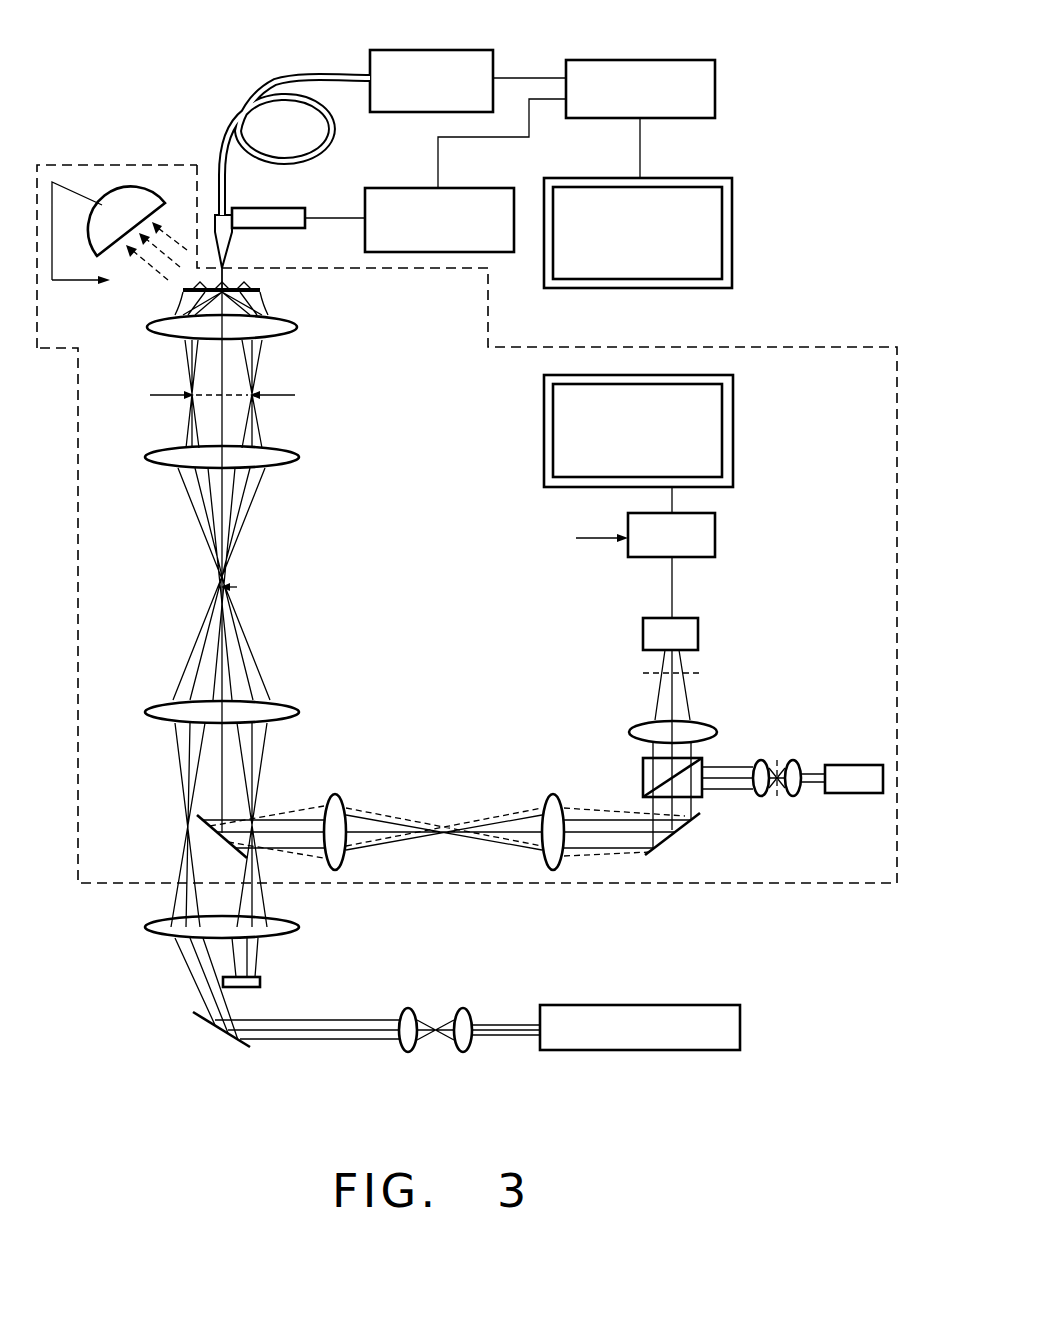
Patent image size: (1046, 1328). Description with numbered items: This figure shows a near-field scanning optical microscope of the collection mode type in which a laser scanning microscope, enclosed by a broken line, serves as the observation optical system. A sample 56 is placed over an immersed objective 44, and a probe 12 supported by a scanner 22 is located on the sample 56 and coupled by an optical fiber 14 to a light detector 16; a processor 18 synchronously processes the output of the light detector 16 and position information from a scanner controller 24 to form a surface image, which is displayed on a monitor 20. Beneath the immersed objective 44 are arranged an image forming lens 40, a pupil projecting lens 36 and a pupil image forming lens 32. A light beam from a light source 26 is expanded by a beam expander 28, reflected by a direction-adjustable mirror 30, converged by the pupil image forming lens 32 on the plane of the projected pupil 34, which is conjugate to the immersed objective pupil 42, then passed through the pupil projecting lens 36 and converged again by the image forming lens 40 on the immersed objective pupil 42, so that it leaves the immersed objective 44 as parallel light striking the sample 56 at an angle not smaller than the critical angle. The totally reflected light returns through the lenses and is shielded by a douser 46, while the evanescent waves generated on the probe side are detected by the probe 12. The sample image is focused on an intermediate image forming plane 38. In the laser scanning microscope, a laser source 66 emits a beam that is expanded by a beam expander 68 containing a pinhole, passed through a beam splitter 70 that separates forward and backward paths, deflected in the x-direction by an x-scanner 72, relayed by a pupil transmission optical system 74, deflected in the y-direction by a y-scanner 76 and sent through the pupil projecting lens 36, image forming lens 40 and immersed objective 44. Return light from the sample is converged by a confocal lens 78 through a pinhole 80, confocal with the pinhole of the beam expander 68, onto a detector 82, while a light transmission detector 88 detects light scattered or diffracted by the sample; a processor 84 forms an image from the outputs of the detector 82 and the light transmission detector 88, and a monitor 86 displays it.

The probe 12 is at (233, 245).
The optical fiber 14 is at (258, 96).
The light detector 16 is at (434, 50).
The processor 18 is at (637, 60).
The monitor 20 is at (733, 222).
The scanner 22 is at (294, 209).
The scanner controller 24 is at (460, 188).
The light source 26 is at (650, 1050).
The beam expander 28 is at (481, 1060).
The mirror 30 is at (232, 1032).
The pupil image forming lens 32 is at (143, 933).
The projected pupil 34 is at (172, 833).
The pupil projecting lens 36 is at (147, 717).
The intermediate image forming plane 38 is at (198, 586).
The image forming lens 40 is at (152, 467).
The immersed objective pupil 42 is at (150, 395).
The immersed objective 44 is at (142, 295).
The douser 46 is at (272, 982).
The sample 56 is at (250, 284).
The laser source 66 is at (855, 793).
The beam expander 68 is at (805, 800).
The beam splitter 70 is at (642, 773).
The x-scanner 72 is at (682, 832).
The pupil transmission optical system 74 is at (565, 790).
The y-scanner 76 is at (211, 828).
The confocal lens 78 is at (713, 723).
The pinhole 80 is at (705, 673).
The detector 82 is at (700, 633).
The processor 84 is at (717, 533).
The monitor 86 is at (733, 425).
The light transmission detector 88 is at (124, 165).